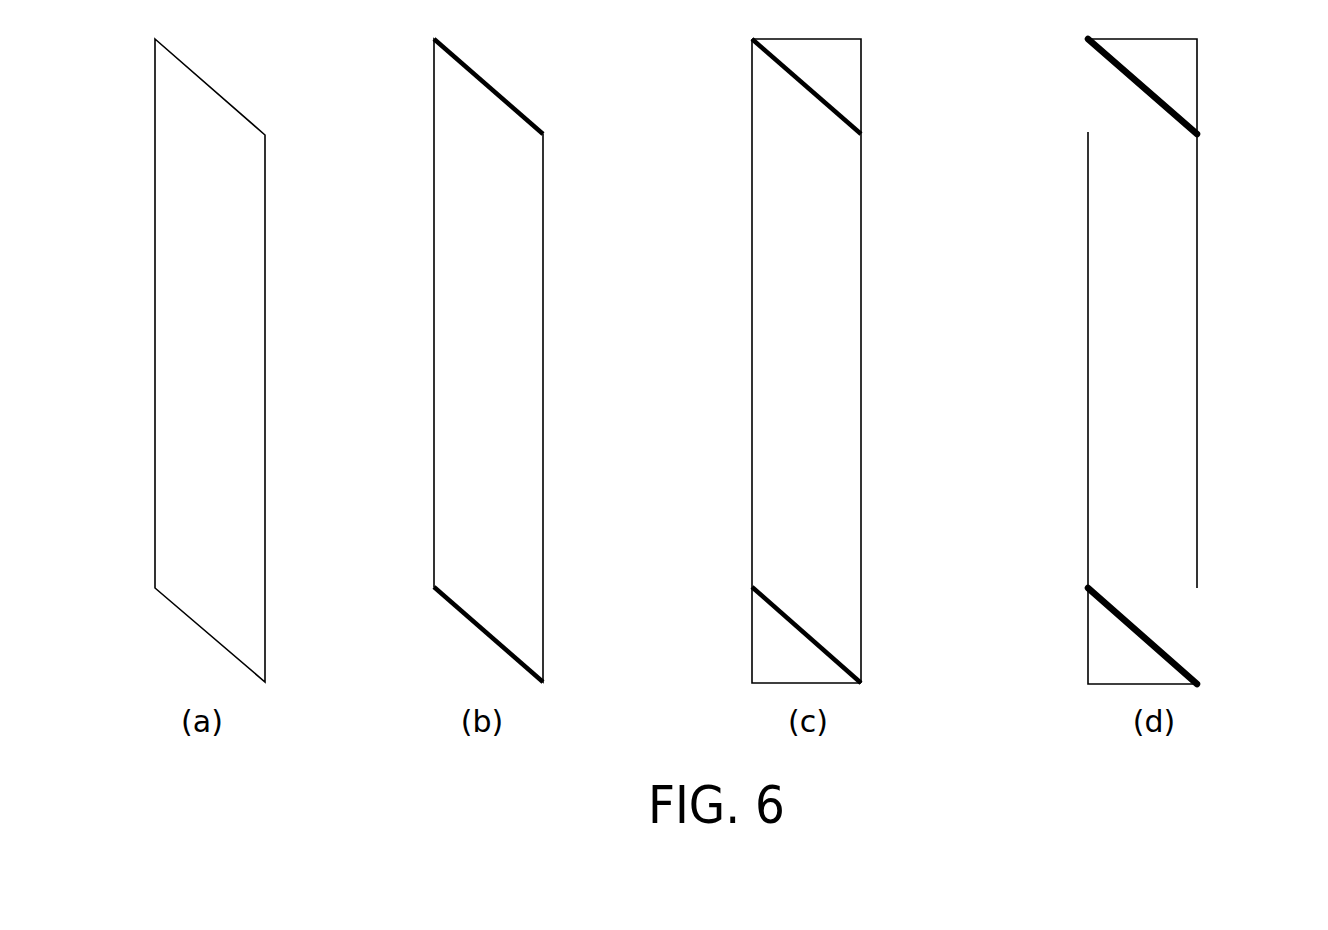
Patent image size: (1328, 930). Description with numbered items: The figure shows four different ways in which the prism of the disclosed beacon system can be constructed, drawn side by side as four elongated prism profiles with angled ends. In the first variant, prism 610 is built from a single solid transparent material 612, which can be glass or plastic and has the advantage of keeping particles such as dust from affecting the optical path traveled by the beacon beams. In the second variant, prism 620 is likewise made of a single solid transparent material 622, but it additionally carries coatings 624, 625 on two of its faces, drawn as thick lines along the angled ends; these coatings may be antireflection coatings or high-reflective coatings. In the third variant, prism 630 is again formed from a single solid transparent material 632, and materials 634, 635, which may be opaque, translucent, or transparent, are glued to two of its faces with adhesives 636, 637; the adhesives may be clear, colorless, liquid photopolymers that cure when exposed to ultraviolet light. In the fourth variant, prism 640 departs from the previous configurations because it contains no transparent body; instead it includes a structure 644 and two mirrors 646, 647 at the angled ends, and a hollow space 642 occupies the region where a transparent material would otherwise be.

The prism 610 is at (272, 360).
The transparent material 612 is at (328, 220).
The prism 620 is at (551, 360).
The transparent material 622 is at (508, 517).
The coating 624 is at (513, 102).
The coating 625 is at (517, 657).
The prism 630 is at (809, 361).
The transparent material 632 is at (825, 517).
The material 634 is at (848, 105).
The material 635 is at (772, 663).
The adhesive 636 is at (795, 82).
The adhesive 637 is at (828, 650).
The prism 640 is at (1131, 358).
The hollow space 642 is at (1158, 508).
The structure 644 is at (1088, 357).
The mirror 646 is at (1170, 102).
The mirror 647 is at (1170, 649).